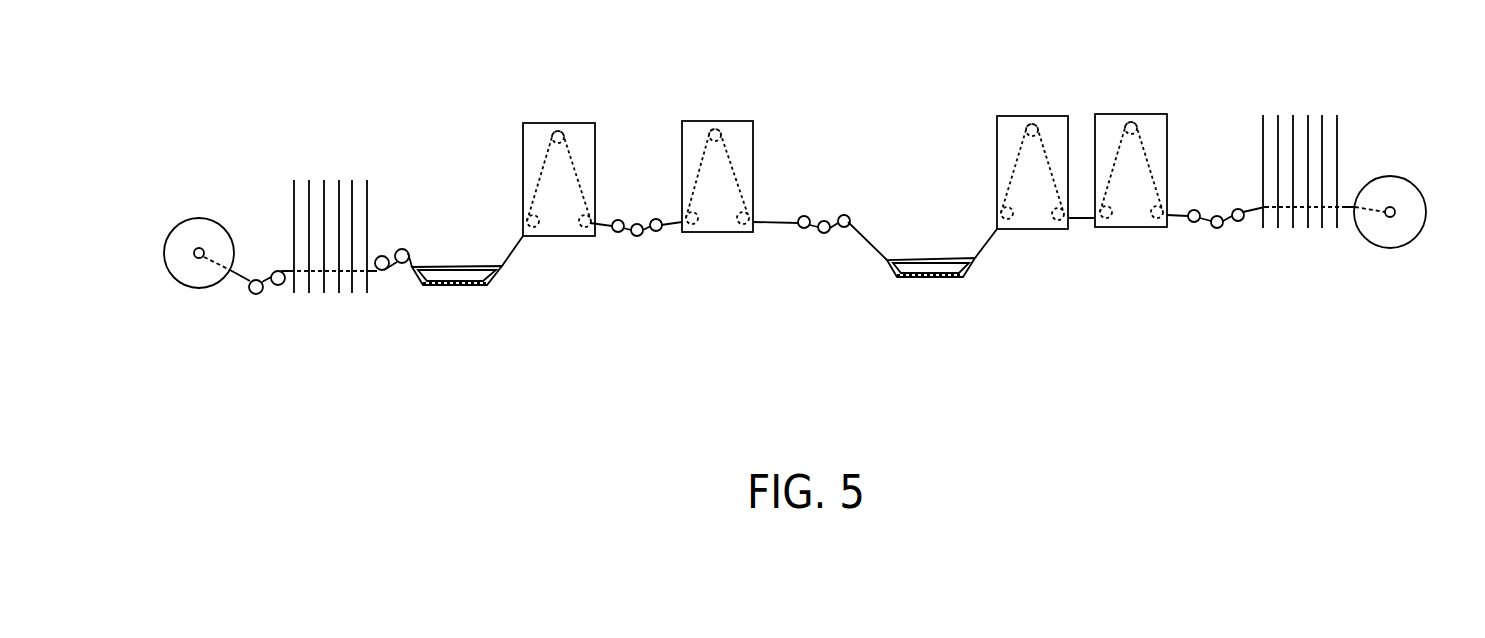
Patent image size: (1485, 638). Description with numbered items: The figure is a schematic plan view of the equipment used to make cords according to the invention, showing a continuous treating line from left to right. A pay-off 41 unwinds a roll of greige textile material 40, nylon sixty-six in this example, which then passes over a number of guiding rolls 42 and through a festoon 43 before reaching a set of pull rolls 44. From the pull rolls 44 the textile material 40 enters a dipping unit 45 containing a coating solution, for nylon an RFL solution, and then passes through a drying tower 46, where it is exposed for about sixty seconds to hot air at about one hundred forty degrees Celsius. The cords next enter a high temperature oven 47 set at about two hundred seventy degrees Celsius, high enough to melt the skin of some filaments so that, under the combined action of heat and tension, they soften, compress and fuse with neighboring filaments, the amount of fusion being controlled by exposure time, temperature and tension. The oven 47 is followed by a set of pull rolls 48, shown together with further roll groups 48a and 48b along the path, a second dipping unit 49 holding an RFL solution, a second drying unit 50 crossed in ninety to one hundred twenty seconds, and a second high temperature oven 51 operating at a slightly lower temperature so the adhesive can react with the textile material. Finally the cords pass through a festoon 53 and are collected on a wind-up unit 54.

The greige textile material 40 is at (239, 282).
The pay-off 41 is at (200, 218).
The guiding rolls 42 is at (278, 285).
The festoon 43 is at (330, 183).
The pull rolls 44 is at (387, 268).
The dipping unit 45 is at (452, 287).
The drying tower 46 is at (560, 123).
The high temperature oven 47 is at (717, 120).
The pull rolls 48 is at (639, 224).
The roller set 48a is at (825, 221).
The roller set 48b is at (1218, 216).
The second dipping unit 49 is at (930, 277).
The second drying unit 50 is at (1033, 116).
The second high temperature oven 51 is at (1132, 113).
The festoon 53 is at (1298, 120).
The wind-up unit 54 is at (1388, 176).